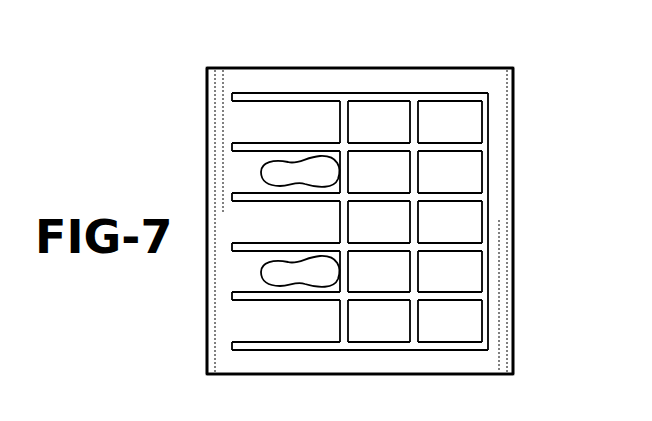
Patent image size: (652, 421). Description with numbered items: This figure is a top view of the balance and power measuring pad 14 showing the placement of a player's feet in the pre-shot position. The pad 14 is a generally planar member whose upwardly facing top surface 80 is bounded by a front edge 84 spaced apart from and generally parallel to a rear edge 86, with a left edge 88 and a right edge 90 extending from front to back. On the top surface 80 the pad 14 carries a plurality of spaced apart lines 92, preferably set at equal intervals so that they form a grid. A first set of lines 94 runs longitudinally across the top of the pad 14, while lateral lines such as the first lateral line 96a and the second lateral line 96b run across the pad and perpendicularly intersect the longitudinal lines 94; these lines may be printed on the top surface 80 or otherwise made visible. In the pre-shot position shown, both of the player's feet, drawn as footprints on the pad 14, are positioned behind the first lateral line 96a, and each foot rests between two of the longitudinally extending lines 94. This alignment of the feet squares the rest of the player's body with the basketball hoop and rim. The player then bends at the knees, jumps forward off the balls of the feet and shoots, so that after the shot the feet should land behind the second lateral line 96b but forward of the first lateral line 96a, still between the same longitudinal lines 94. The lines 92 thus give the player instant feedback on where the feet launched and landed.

The balance and power measuring pad 14 is at (514, 213).
The top surface 80 is at (233, 322).
The front edge 84 is at (513, 162).
The rear edge 86 is at (208, 163).
The left edge 88 is at (268, 68).
The right edge 90 is at (462, 376).
The lines 92 is at (268, 142).
The first set of lines 94 is at (303, 93).
The first lateral line 96a is at (348, 122).
The second lateral line 96b is at (418, 122).